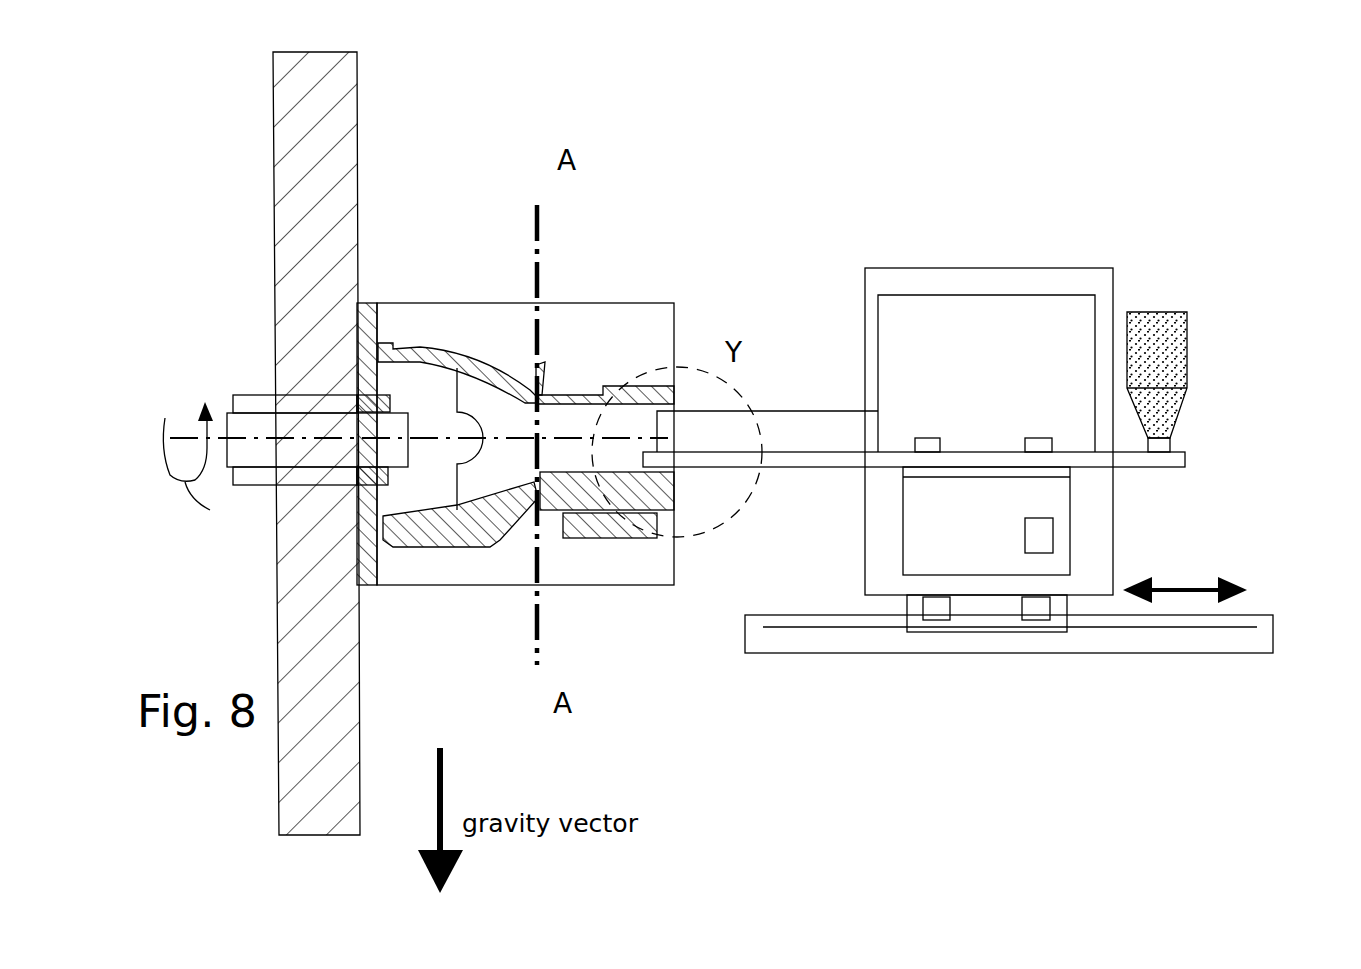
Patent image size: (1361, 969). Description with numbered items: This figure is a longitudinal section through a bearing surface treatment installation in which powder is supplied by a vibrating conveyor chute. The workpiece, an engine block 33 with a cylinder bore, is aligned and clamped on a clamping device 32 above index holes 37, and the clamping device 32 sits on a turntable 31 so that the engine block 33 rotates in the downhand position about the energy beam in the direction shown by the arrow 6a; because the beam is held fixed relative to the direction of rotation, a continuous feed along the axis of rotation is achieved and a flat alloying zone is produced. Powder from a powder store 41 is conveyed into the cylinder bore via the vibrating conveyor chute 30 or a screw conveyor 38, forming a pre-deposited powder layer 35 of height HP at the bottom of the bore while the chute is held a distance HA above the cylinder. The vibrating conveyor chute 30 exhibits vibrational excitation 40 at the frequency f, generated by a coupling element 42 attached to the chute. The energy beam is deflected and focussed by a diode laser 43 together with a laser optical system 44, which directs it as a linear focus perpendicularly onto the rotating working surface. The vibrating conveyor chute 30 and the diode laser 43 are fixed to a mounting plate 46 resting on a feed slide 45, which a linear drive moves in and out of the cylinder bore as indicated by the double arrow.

The turntable 31 is at (330, 168).
The clamping device 32 is at (377, 305).
The engine block 33 is at (490, 358).
The pre-deposited powder layer 35 is at (646, 395).
The laser optical system 44 is at (597, 470).
The screw conveyor 38 is at (773, 450).
The vibrating conveyor chute 30 is at (1188, 458).
The vibrational excitation 40 is at (1042, 498).
The diode laser 43 is at (894, 315).
The coupling element 42 is at (927, 442).
The mounting plate 46 is at (992, 585).
The feed slide 45 is at (930, 605).
The powder store 41 is at (1165, 352).
The index holes 37 is at (356, 400).
The arrow 6a is at (208, 473).